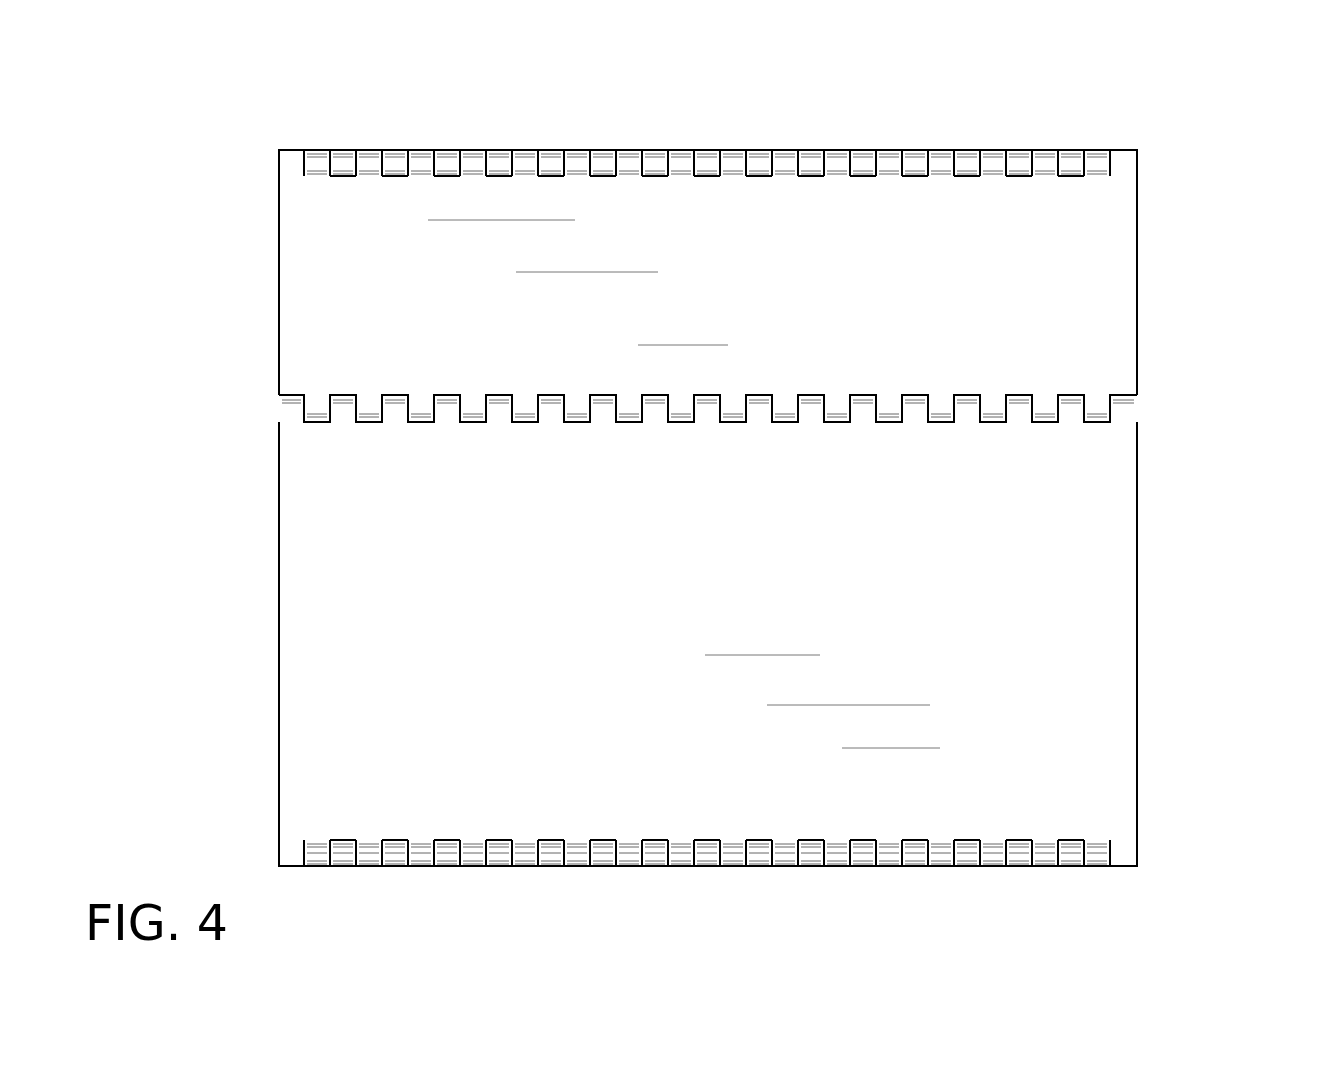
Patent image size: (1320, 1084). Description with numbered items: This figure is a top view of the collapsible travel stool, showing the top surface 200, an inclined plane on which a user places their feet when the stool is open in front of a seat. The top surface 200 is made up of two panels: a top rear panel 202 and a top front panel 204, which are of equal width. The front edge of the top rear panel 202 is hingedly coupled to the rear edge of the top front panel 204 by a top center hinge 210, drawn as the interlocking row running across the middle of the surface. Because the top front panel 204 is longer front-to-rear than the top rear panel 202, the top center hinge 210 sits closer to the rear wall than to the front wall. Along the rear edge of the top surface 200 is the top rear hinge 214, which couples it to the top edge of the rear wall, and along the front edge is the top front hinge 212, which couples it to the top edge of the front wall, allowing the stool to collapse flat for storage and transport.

The top surface 200 is at (723, 503).
The top rear panel 202 is at (305, 249).
The top front panel 204 is at (315, 705).
The top center hinge 210 is at (760, 408).
The top front hinge 212 is at (918, 855).
The top rear hinge 214 is at (865, 165).